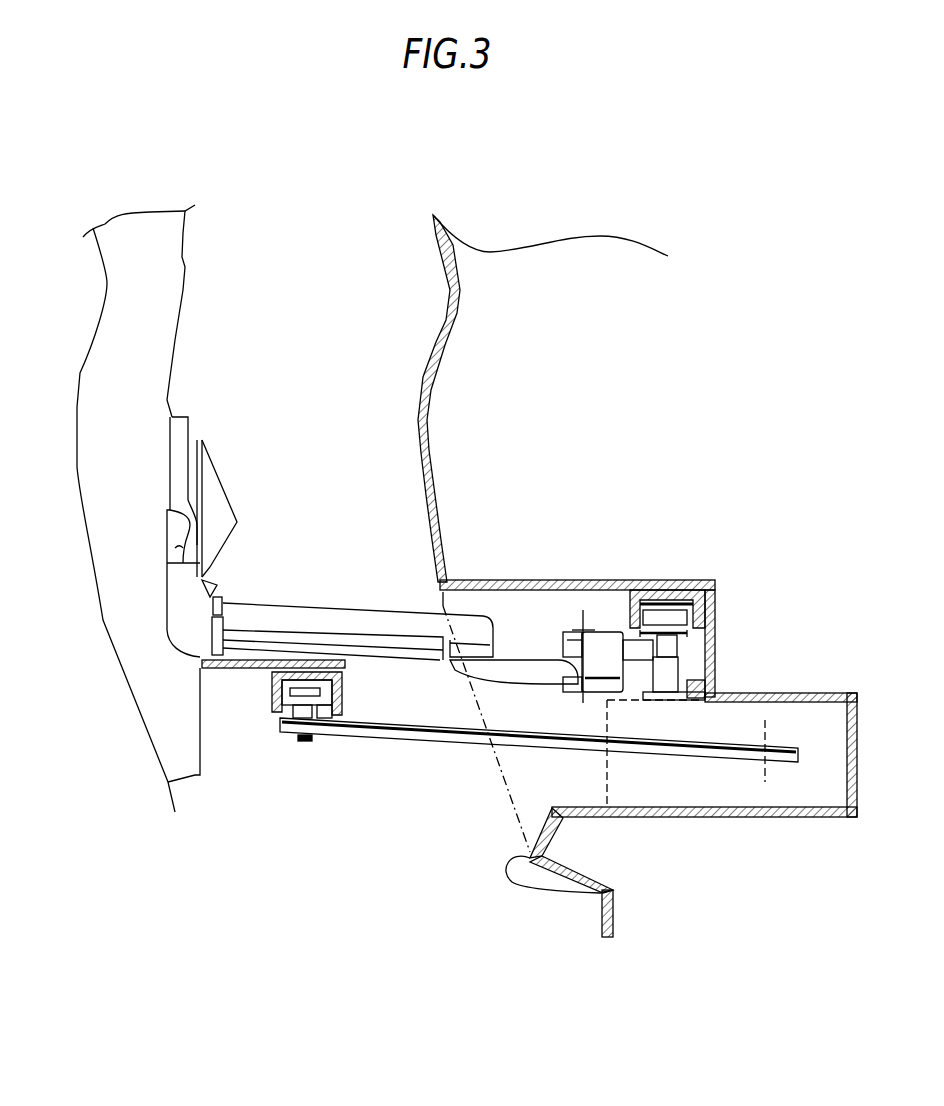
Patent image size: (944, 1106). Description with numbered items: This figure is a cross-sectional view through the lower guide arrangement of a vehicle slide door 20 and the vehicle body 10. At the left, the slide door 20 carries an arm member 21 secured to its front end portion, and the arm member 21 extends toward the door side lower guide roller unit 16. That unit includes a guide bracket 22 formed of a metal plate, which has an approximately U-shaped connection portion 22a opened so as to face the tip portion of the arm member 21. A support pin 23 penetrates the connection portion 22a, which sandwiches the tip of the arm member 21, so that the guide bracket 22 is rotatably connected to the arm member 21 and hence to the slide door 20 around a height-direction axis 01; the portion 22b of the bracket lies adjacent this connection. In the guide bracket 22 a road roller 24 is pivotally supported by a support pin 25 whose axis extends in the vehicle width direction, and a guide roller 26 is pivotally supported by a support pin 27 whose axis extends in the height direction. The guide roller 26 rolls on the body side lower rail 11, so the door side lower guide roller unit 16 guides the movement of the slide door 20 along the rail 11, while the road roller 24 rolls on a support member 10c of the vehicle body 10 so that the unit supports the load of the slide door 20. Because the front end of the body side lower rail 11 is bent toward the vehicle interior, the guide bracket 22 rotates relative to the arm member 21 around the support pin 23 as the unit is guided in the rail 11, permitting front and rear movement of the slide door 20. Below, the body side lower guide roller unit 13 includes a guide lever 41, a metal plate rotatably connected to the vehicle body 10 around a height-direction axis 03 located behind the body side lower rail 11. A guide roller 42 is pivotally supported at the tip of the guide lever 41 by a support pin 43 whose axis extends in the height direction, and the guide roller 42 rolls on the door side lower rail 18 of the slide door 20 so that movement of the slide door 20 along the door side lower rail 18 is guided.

The vehicle body 10 is at (421, 450).
The support member 10c is at (598, 820).
The body side lower rail 11 is at (714, 592).
The body side lower guide roller unit 13 is at (523, 760).
The door side lower guide roller unit 16 is at (689, 691).
The door side lower rail 18 is at (272, 688).
The slide door 20 is at (112, 622).
The arm member 21 is at (323, 603).
The guide bracket 22 is at (638, 640).
The connection portion 22a is at (565, 640).
The latch second portion 22b is at (700, 653).
The support pin 23 is at (583, 625).
The road roller 24 is at (710, 686).
The support pin 25 is at (631, 667).
The guide roller 26 is at (676, 605).
The support pin 27 is at (700, 636).
The guide lever 41 is at (422, 742).
The guide roller 42 is at (283, 712).
The support pin 43 is at (301, 744).
The axis O1 01 is at (560, 700).
The axis O3 03 is at (765, 782).